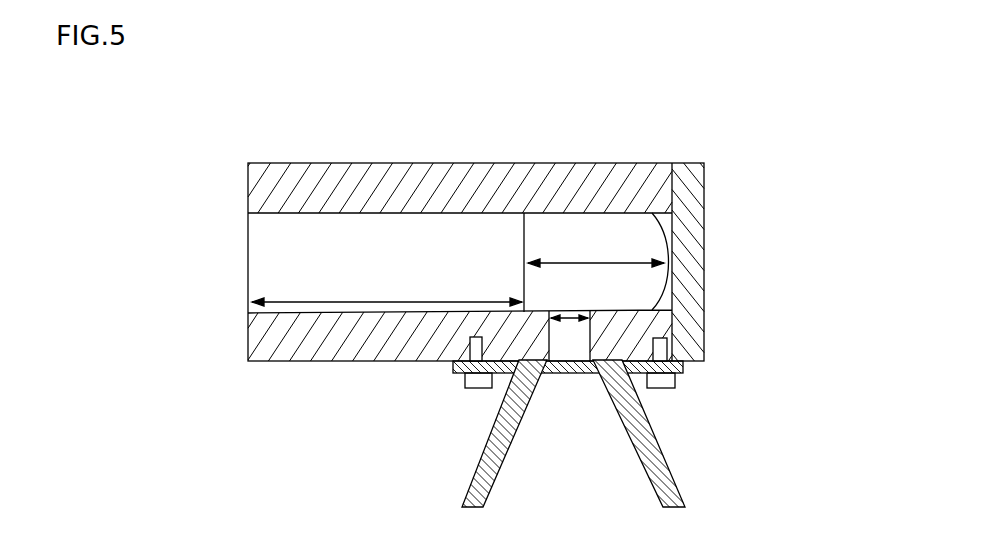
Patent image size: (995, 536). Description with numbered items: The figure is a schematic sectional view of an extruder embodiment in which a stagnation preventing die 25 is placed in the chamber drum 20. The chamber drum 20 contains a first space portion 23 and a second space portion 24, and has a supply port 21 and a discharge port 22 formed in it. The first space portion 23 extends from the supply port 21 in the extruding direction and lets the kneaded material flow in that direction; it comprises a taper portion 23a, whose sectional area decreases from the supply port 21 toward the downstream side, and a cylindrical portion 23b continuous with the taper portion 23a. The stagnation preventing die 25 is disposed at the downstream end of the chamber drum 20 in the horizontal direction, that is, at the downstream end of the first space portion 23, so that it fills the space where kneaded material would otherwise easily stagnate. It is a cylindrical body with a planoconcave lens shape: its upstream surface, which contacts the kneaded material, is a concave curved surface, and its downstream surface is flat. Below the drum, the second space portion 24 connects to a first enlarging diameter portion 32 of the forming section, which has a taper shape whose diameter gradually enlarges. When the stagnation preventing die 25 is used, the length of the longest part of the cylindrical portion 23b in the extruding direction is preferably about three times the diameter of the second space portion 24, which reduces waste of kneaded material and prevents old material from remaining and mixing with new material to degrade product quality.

The chamber drum 20 is at (702, 142).
The supply port 21 is at (248, 258).
The discharge port 22 is at (572, 347).
The first space portion 23 is at (554, 206).
The taper portion 23a is at (345, 228).
The cylindrical portion 23b is at (628, 282).
The second space portion 24 is at (660, 383).
The stagnation preventing die 25 is at (670, 228).
The first enlarging diameter portion 32 is at (555, 476).